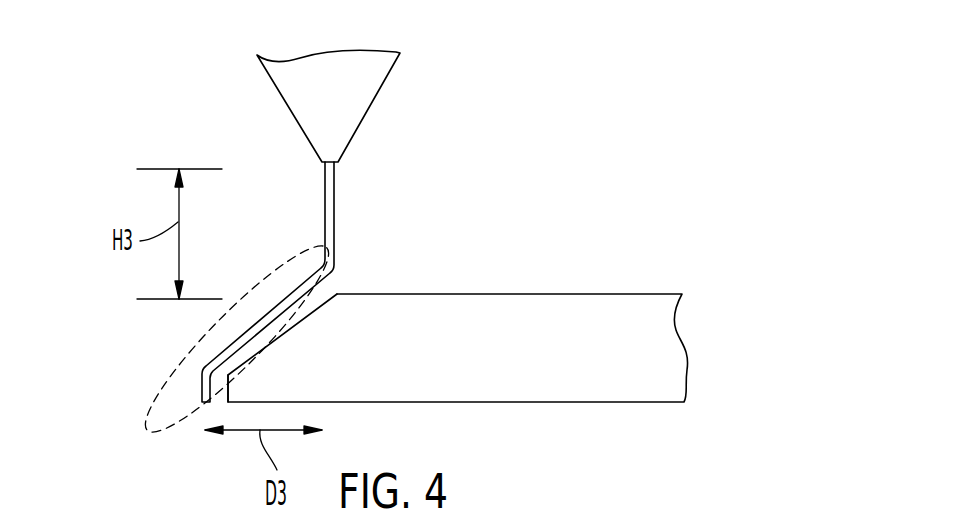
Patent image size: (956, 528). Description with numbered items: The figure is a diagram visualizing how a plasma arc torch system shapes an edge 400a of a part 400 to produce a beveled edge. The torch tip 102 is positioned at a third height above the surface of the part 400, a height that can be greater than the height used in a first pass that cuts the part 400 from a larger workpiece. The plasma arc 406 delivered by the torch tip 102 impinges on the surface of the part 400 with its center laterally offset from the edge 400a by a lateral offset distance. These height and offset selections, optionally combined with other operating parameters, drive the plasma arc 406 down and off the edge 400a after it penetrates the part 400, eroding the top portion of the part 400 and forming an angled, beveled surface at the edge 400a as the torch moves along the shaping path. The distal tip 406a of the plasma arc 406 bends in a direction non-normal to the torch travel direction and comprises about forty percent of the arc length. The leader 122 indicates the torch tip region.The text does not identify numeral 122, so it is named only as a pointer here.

The torch tip 102 is at (370, 88).
The torch tip outer surface / edge 122 is at (356, 146).
The part 400 is at (505, 294).
The edge 400a is at (272, 379).
The plasma arc 406 is at (330, 208).
The distal tip 406a is at (162, 393).